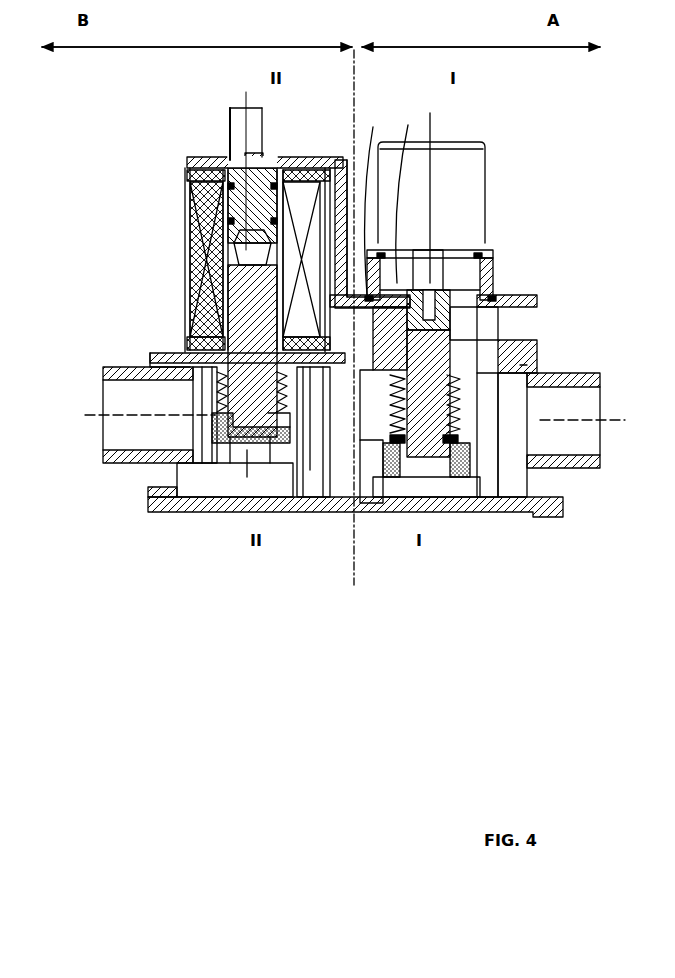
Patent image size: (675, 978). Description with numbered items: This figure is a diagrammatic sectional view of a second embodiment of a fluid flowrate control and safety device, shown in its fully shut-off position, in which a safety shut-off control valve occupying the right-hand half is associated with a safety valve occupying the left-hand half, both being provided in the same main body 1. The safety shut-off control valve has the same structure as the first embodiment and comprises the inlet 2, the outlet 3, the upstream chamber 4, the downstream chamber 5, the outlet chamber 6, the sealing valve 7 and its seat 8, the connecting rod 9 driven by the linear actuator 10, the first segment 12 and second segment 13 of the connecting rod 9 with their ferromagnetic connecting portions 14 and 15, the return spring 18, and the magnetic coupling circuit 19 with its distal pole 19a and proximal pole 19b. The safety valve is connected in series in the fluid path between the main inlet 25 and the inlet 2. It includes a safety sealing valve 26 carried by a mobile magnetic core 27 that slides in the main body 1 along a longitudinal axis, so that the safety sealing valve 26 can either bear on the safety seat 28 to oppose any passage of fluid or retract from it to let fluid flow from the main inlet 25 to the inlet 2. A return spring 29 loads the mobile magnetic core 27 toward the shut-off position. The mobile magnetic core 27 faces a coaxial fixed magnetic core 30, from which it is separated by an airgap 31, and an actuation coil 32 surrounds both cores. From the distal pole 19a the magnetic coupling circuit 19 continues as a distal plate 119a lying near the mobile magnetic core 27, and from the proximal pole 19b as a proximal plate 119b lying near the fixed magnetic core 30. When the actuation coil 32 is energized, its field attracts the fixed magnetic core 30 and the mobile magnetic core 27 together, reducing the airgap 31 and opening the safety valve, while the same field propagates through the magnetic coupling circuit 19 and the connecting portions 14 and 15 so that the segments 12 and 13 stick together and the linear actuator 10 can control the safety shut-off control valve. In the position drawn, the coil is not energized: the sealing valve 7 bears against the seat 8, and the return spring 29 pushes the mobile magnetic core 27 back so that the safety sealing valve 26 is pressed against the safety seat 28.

The main body 1 is at (540, 467).
The inlet 2 is at (383, 477).
The outlet 3 is at (603, 403).
The upstream chamber 4 is at (407, 483).
The downstream chamber 5 is at (450, 457).
The outlet chamber 6 is at (503, 493).
The sealing valve 7 is at (437, 450).
The seat 8 is at (477, 480).
The connecting rod 9 is at (477, 277).
The linear actuator 10 is at (463, 183).
The first segment of the connecting rod 12 is at (500, 353).
The second segment of the connecting rod 13 is at (487, 253).
The ferromagnetic material connecting portion 14 is at (440, 307).
The ferromagnetic material connecting portion 15 is at (443, 277).
The return spring 18 is at (457, 420).
The magnetic coupling circuit 19 is at (371, 199).
The distal pole 19a is at (330, 503).
The proximal pole 19b is at (411, 193).
The main inlet 25 is at (120, 427).
The safety sealing valve 26 is at (263, 450).
The mobile magnetic core 27 is at (247, 298).
The safety seat 28 is at (217, 455).
The return spring 29 is at (217, 412).
The fixed magnetic core 30 is at (250, 213).
The airgap 31 is at (250, 260).
The actuation coil 32 is at (200, 247).
The distal plate 119a is at (160, 353).
The proximal plate 119b is at (318, 157).